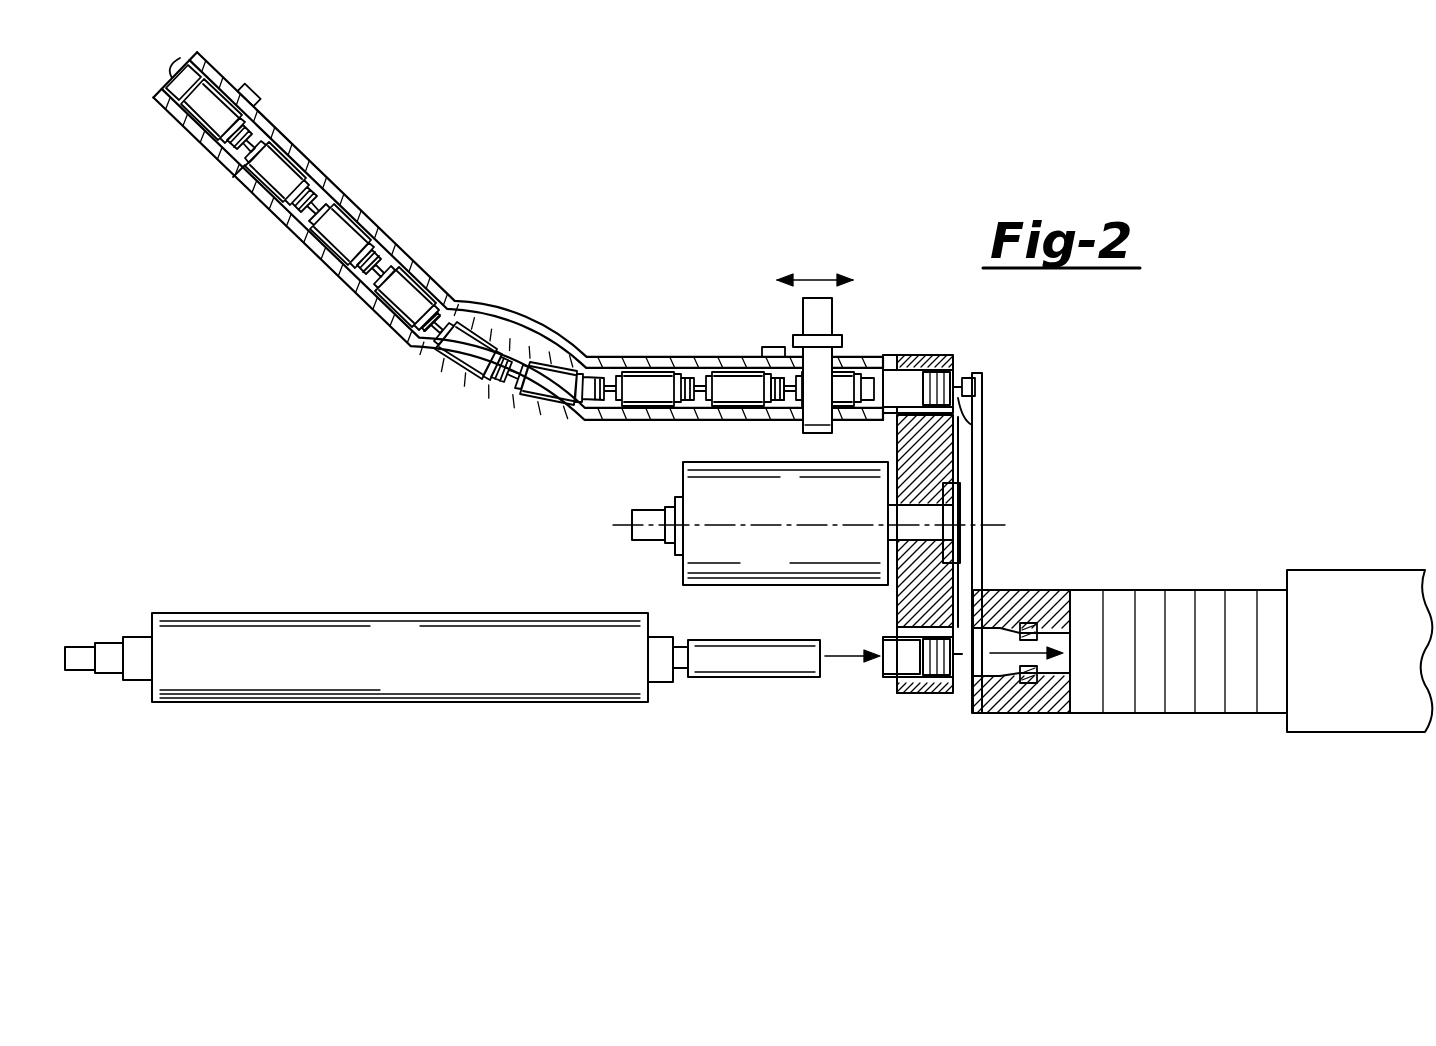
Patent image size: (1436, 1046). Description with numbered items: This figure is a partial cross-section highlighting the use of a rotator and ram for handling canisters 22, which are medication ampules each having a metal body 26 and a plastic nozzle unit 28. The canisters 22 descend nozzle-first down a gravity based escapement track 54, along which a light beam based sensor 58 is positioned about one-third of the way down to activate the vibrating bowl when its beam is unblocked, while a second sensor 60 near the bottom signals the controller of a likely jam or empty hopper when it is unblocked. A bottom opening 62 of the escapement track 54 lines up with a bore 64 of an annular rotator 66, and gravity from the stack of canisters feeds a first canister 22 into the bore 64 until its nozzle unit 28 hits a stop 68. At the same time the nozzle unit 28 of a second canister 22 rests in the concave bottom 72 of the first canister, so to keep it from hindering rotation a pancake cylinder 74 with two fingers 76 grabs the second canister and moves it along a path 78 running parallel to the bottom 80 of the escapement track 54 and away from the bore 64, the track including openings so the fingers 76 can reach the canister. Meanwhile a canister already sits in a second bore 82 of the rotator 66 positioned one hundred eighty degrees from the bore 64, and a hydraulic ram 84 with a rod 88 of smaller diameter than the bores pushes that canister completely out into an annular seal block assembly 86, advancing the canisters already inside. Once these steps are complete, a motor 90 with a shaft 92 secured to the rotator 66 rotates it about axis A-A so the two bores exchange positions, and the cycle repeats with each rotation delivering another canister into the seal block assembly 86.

The canister 22 is at (263, 117).
The metal body 26 is at (200, 142).
The nozzle unit 28 is at (233, 177).
The escapement track 54 is at (398, 245).
The light beam based sensor 58 is at (262, 88).
The second sensor 60 is at (773, 347).
The bottom opening 62 is at (888, 413).
The bore 64 is at (955, 368).
The annular rotator 66 is at (958, 453).
The stop 68 is at (985, 386).
The concave bottom 72 is at (890, 385).
The pancake cylinder 74 is at (832, 325).
The fingers 76 is at (805, 432).
The path 78 is at (815, 278).
The bottom 80 is at (775, 380).
The second bore 82 is at (893, 680).
The hydraulic ram 84 is at (415, 702).
The annular seal block assembly 86 is at (1160, 590).
The rod 88 is at (760, 678).
The motor 90 is at (697, 485).
The shaft 92 is at (960, 500).